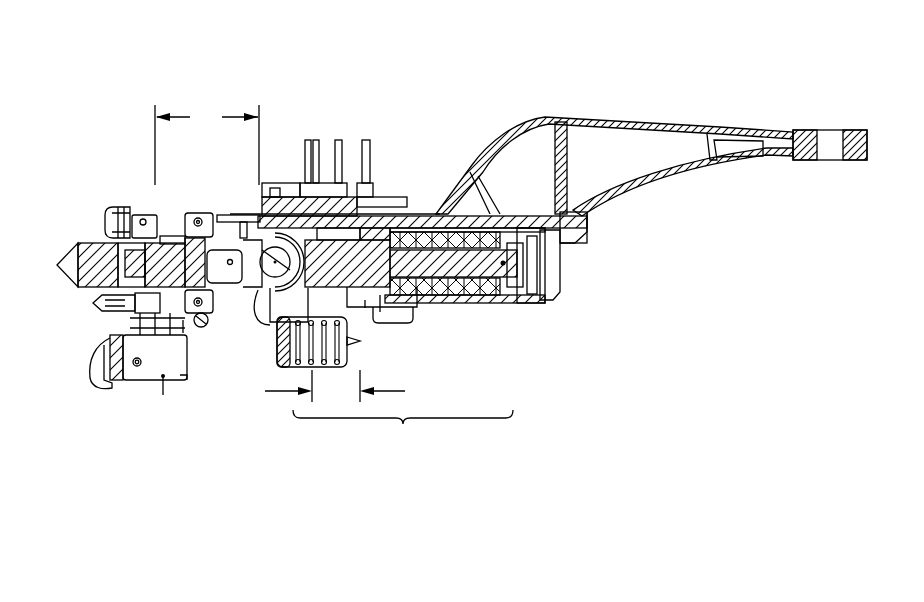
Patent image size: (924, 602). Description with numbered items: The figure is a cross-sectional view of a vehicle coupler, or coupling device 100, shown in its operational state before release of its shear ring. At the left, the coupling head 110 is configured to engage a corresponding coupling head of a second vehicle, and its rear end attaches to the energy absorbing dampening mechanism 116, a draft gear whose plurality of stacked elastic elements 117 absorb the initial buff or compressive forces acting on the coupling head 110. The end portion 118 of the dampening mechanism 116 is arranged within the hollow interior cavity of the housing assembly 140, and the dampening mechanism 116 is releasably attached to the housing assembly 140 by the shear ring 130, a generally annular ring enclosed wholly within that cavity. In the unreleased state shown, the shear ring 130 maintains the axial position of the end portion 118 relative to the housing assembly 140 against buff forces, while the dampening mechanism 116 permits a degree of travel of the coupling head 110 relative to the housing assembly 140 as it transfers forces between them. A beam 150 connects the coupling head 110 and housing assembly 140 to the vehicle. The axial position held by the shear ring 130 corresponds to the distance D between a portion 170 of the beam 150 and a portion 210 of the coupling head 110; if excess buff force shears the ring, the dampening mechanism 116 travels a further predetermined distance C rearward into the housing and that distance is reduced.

The coupling device 100 is at (446, 90).
The coupling head 110 is at (110, 257).
The dampening mechanism 116 is at (403, 433).
The stacked elastic elements 117 is at (443, 228).
The end portion 118 is at (513, 292).
The shear ring 130 is at (525, 262).
The housing assembly 140 is at (457, 305).
The beam 150 is at (640, 122).
The portion of beam 170 is at (258, 194).
The portion of coupling head 210 is at (142, 217).